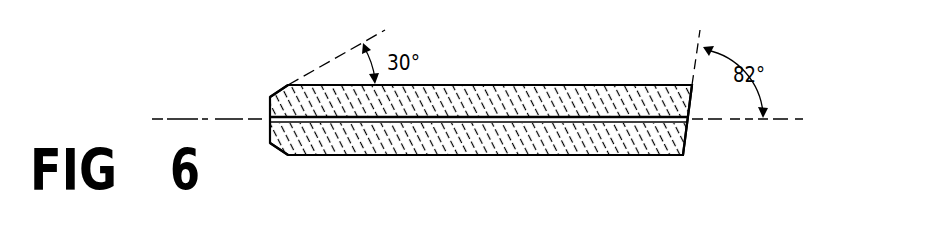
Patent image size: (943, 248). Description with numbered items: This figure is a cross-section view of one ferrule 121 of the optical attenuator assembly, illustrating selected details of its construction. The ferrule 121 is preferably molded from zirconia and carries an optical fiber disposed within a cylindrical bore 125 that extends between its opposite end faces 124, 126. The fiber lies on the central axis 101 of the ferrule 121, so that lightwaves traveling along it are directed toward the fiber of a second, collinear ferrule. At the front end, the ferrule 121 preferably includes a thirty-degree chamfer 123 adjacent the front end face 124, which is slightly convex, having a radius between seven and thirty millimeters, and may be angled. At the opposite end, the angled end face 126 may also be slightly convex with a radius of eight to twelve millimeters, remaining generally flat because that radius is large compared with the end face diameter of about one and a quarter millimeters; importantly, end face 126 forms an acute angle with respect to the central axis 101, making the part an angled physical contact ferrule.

The central axis 101 is at (172, 113).
The ferrule 121 is at (496, 72).
The chamfer 123 is at (273, 149).
The front end face 124 is at (270, 107).
The cylindrical bore 125 is at (497, 121).
The angled end face 126 is at (688, 135).